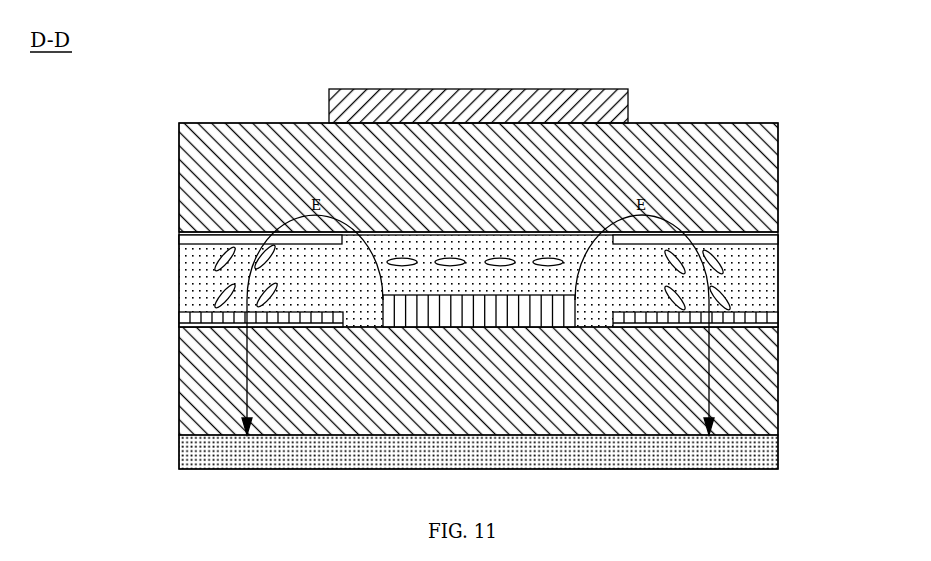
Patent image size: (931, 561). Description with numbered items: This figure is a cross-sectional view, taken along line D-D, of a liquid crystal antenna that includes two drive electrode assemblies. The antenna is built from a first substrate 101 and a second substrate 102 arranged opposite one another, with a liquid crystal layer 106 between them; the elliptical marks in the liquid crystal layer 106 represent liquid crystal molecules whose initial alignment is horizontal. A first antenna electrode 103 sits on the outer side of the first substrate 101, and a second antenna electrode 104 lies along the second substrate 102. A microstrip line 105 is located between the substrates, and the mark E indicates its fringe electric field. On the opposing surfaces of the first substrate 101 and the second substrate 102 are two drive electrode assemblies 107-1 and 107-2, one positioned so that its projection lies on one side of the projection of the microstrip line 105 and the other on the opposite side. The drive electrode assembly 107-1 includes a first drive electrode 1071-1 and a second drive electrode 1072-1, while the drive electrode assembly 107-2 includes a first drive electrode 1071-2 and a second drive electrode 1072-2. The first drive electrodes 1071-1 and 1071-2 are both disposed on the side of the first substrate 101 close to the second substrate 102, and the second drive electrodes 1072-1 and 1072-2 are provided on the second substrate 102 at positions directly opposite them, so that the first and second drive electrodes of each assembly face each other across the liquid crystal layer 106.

The first substrate 101 is at (675, 123).
The second substrate 102 is at (778, 383).
The first antenna electrode 103 is at (578, 88).
The second antenna electrode 104 is at (778, 435).
The microstrip line 105 is at (512, 327).
The liquid crystal layer 106 is at (358, 303).
The drive electrode assembly 107-1 is at (194, 255).
The drive electrode assembly 107-2 is at (752, 263).
The first drive electrode 1071-1 is at (197, 232).
The second drive electrode 1072-1 is at (205, 313).
The first drive electrode 1071-2 is at (745, 233).
The second drive electrode 1072-2 is at (735, 312).